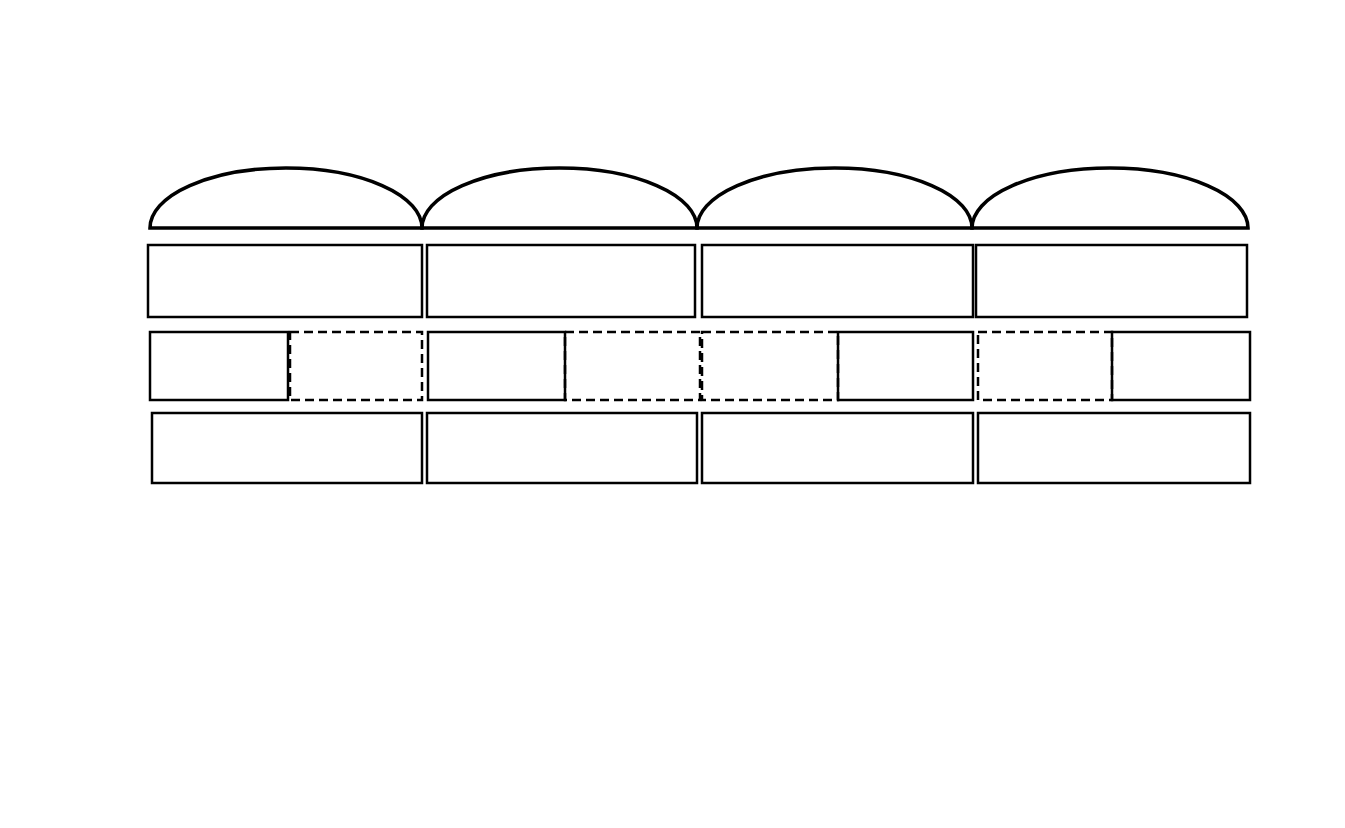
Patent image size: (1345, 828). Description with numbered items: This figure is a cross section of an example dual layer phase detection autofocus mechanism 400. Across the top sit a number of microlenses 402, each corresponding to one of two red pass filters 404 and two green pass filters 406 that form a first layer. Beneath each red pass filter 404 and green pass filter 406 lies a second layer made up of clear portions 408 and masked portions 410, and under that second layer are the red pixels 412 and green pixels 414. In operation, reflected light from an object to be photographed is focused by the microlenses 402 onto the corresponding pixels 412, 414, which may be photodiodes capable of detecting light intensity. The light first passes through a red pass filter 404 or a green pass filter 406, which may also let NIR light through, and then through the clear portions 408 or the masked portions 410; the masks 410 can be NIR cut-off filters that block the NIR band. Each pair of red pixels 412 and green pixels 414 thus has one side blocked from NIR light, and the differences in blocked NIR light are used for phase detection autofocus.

The dual layer phase detection autofocus mechanism 400 is at (727, 652).
The microlenses 402 is at (1037, 177).
The red pass filters 404 is at (480, 244).
The green pass filters 406 is at (148, 254).
The clear portions 408 is at (150, 368).
The masked portions 410 is at (385, 402).
The red pixels 412 is at (573, 485).
The green pixels 414 is at (237, 485).